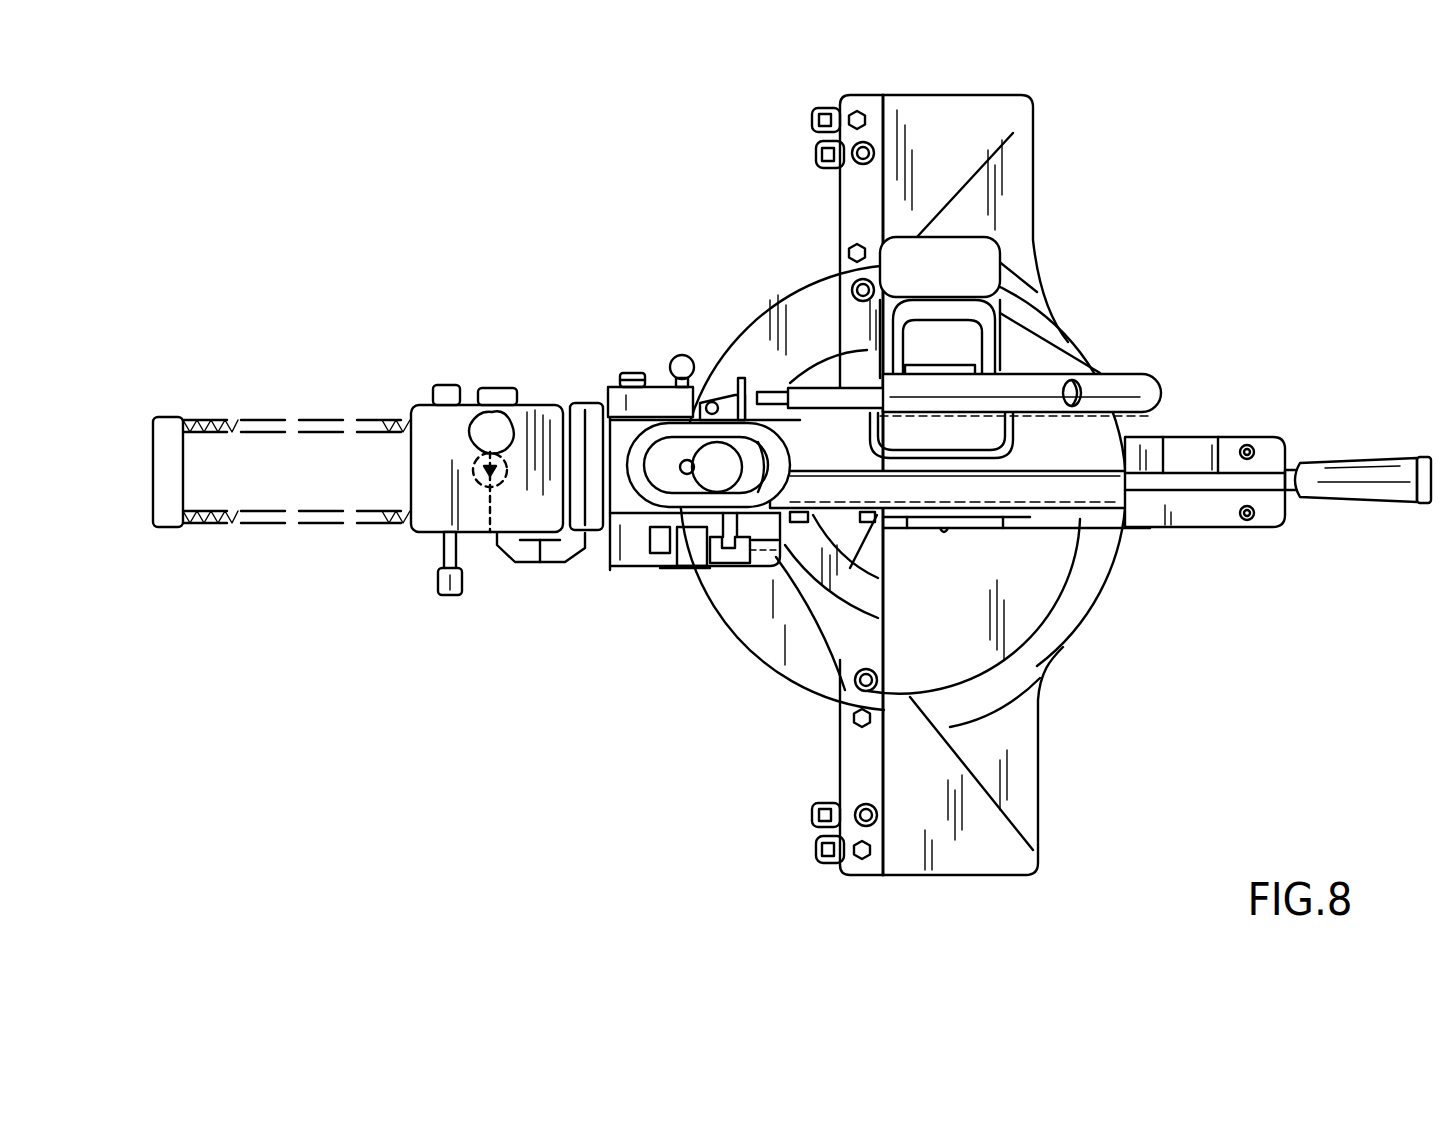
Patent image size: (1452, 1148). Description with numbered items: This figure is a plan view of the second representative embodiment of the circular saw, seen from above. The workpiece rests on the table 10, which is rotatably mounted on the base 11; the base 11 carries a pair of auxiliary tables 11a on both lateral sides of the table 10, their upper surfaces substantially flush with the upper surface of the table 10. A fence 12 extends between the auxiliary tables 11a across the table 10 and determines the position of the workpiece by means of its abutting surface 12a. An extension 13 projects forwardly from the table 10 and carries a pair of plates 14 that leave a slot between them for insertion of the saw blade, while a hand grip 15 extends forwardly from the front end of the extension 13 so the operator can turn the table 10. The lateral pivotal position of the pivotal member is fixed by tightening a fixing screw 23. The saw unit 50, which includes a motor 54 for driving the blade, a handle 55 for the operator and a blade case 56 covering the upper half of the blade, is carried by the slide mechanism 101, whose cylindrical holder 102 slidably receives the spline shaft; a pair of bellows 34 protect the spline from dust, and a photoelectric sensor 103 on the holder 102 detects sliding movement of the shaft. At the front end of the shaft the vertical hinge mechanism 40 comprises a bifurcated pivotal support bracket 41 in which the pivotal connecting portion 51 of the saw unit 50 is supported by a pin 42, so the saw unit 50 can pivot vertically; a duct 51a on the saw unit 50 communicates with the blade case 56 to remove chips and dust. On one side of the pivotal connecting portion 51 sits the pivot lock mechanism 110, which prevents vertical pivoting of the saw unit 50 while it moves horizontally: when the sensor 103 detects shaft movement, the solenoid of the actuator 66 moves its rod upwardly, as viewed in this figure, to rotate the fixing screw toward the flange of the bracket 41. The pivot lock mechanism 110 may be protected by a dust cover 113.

The table 10 is at (1020, 598).
The base 11 is at (1043, 327).
The auxiliary tables 11a is at (943, 137).
The fence 12 is at (876, 588).
The abutting surface 12a is at (883, 584).
The extension 13 is at (1215, 437).
The plates 14 is at (1195, 463).
The hand grip 15 is at (1355, 470).
The fixing screw 23 is at (441, 596).
The bellows 34 is at (281, 418).
The vertical hinge mechanism 40 is at (658, 355).
The pivotal support bracket 41 is at (627, 540).
The pin 42 is at (632, 373).
The saw unit 50 is at (843, 372).
The pivotal connecting portion 51 is at (612, 525).
The duct 51a is at (745, 392).
The motor 54 is at (935, 270).
The handle 55 is at (1125, 383).
The blade case 56 is at (963, 487).
The actuator 66 is at (735, 568).
The slide mechanism 101 is at (437, 365).
The cylindrical holder 102 is at (433, 500).
The photoelectric sensor 103 is at (478, 490).
The pivot lock mechanism 110 is at (685, 582).
The dust cover 113 is at (773, 578).